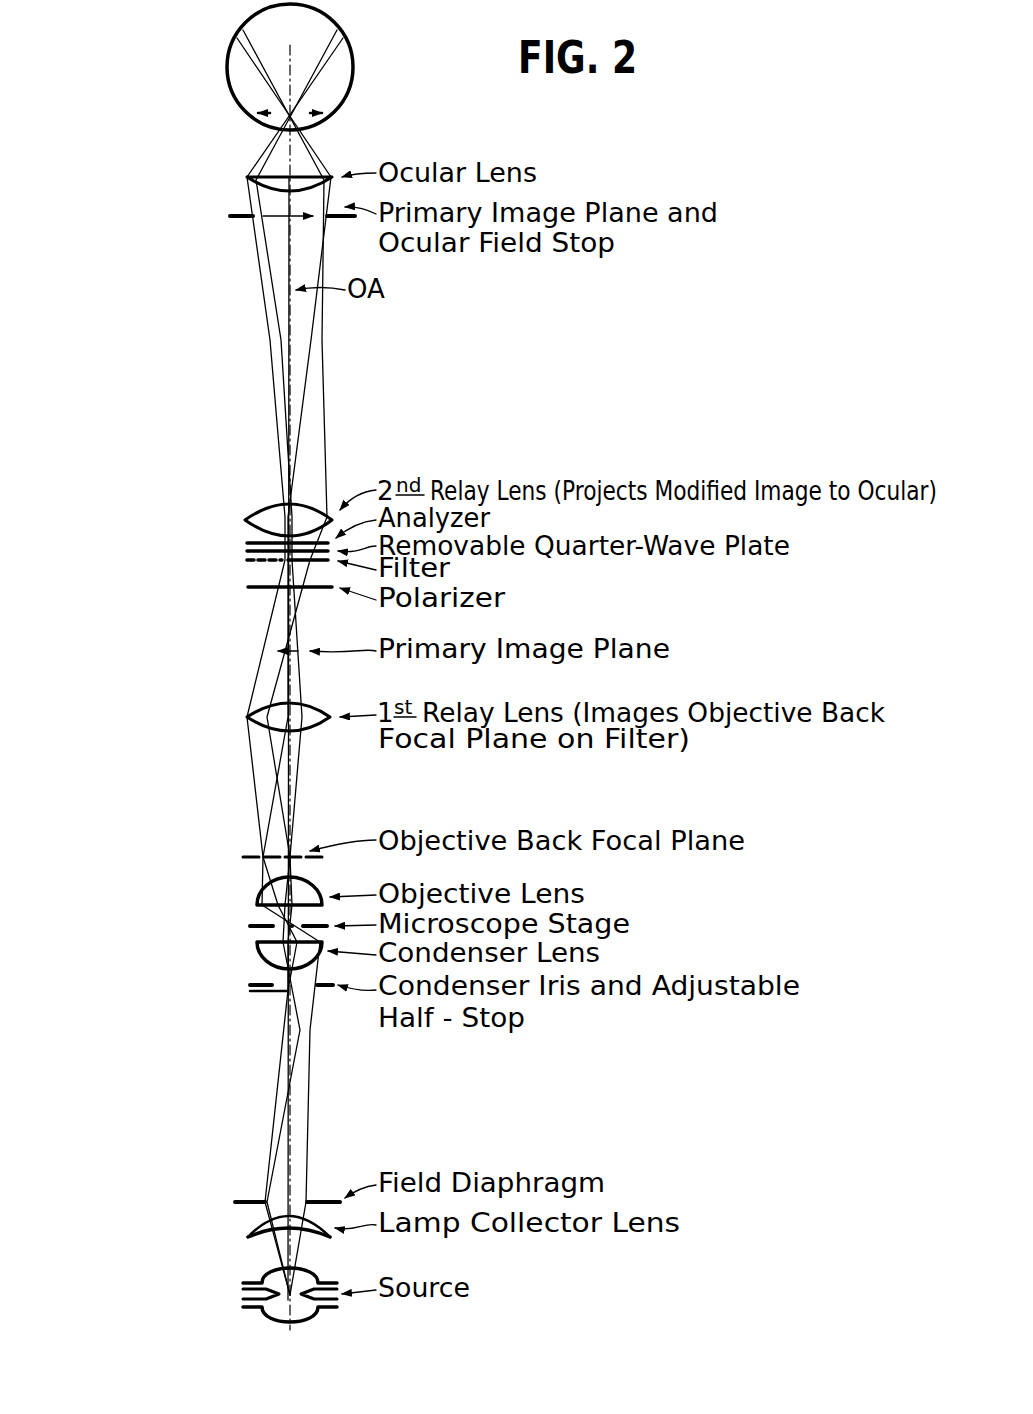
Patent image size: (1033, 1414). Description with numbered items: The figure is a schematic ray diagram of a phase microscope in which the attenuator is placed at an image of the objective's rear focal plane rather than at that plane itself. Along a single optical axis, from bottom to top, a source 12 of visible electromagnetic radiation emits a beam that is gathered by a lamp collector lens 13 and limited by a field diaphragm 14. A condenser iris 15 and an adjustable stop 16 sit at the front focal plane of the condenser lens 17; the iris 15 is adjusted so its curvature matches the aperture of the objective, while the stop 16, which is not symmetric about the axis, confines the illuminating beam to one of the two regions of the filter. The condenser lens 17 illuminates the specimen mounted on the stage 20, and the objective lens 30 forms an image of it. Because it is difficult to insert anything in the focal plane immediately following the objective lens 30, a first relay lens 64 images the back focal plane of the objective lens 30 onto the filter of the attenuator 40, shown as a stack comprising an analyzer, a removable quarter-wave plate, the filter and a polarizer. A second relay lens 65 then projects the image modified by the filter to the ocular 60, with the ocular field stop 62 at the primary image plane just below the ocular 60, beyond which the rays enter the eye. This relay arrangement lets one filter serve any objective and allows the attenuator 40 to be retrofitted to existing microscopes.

The ocular 60 is at (258, 187).
The ocular field stop 62 is at (236, 222).
The second relay lens 65 is at (262, 512).
The attenuator 40 is at (237, 533).
The first relay lens 64 is at (262, 718).
The objective lens 30 is at (262, 898).
The stage 20 is at (250, 928).
The condenser lens 17 is at (265, 952).
The condenser iris 15 is at (262, 985).
The adjustable stop 16 is at (262, 996).
The field diaphragm 14 is at (252, 1200).
The lamp collector lens 13 is at (258, 1232).
The source 12 is at (238, 1294).